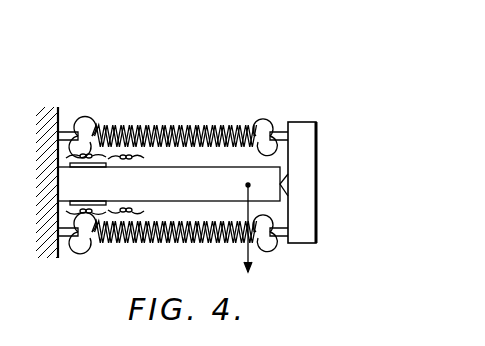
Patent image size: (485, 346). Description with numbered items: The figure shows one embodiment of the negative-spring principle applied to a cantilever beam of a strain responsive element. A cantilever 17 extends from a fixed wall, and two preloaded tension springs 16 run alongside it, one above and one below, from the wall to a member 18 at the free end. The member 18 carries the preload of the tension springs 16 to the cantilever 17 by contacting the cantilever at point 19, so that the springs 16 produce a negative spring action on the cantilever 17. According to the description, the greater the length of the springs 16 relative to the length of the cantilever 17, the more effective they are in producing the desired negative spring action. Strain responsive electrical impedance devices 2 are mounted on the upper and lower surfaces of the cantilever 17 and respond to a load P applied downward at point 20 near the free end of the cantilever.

The strain responsive electrical impedance devices 2 is at (90, 200).
The tension springs 16 is at (173, 122).
The cantilever 17 is at (192, 171).
The member 18 is at (318, 143).
The point 19 is at (282, 183).
The point 20 is at (246, 185).